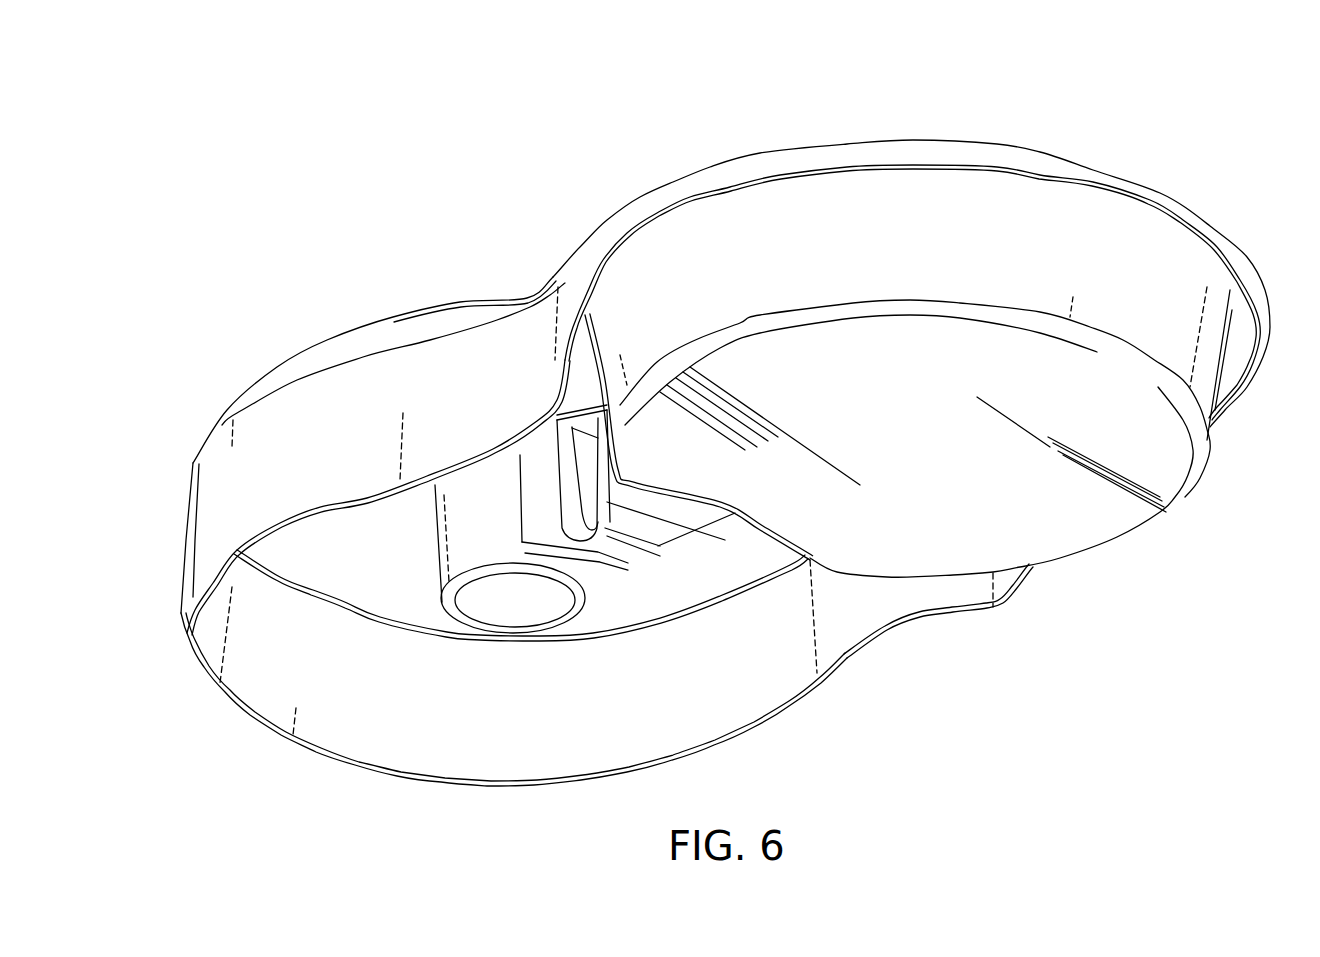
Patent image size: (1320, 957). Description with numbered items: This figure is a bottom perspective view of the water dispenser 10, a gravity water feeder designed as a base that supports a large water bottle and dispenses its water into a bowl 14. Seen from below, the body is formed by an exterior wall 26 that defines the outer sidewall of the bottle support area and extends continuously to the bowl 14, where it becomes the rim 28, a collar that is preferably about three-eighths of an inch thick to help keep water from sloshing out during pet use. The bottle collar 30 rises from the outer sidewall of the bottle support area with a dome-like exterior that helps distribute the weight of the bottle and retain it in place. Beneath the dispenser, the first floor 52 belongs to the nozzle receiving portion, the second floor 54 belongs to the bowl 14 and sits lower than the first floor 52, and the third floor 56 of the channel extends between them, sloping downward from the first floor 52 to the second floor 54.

The water dispenser 10 is at (1052, 90).
The bowl 14 is at (1185, 178).
The exterior wall 26 is at (343, 405).
The rim 28 is at (750, 172).
The bottle collar 30 is at (425, 330).
The first floor 52 is at (500, 606).
The second floor 54 is at (1052, 517).
The third floor 56 is at (680, 518).